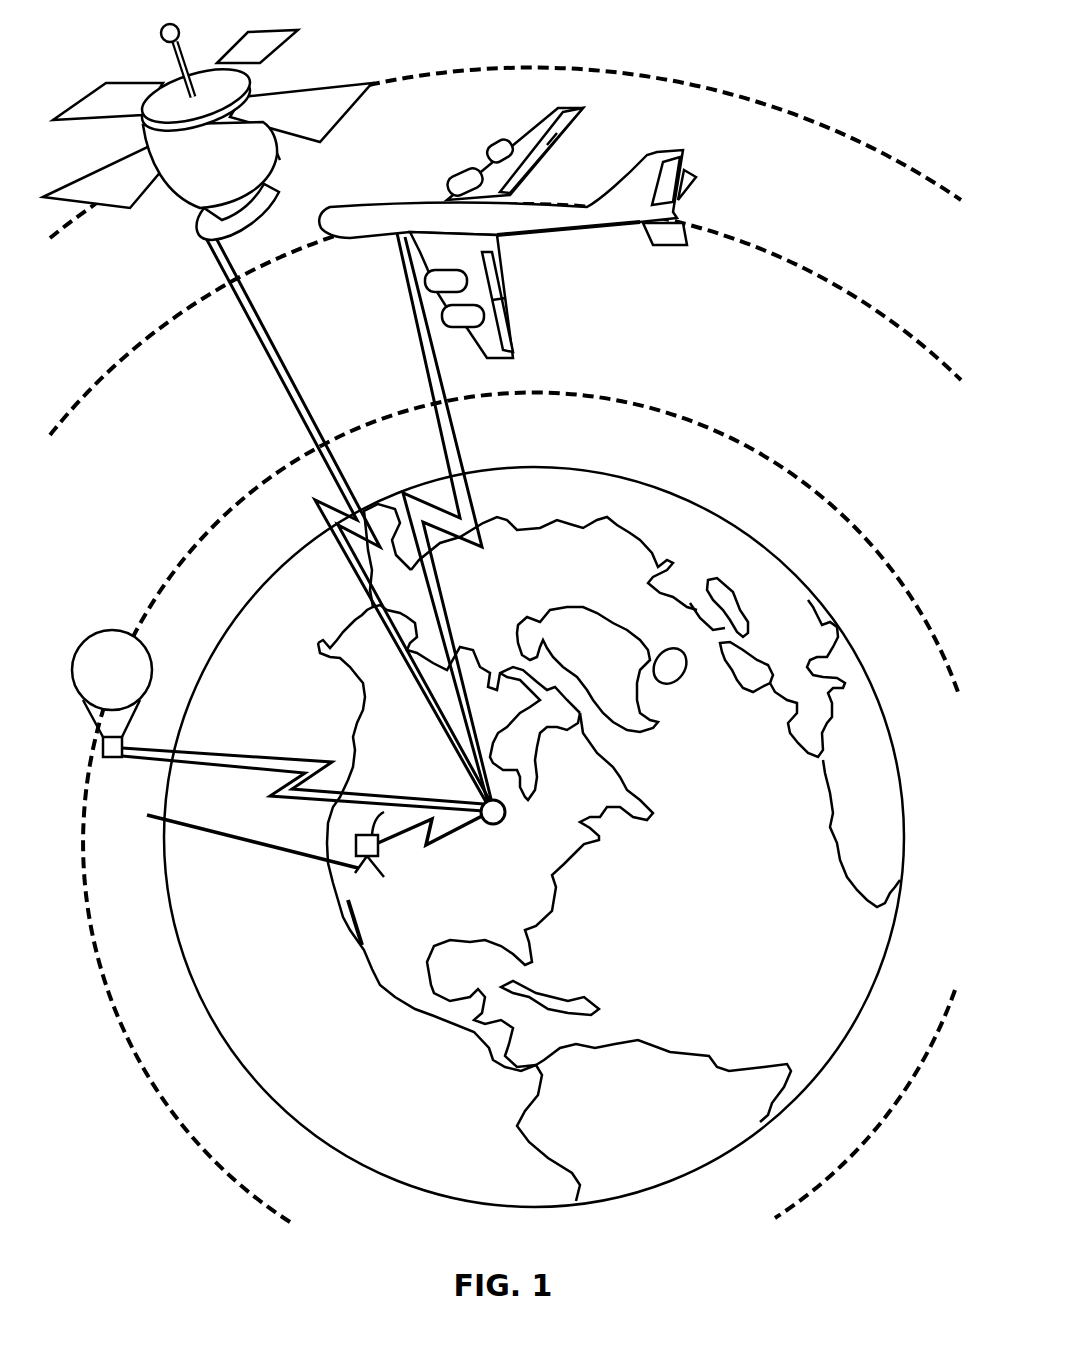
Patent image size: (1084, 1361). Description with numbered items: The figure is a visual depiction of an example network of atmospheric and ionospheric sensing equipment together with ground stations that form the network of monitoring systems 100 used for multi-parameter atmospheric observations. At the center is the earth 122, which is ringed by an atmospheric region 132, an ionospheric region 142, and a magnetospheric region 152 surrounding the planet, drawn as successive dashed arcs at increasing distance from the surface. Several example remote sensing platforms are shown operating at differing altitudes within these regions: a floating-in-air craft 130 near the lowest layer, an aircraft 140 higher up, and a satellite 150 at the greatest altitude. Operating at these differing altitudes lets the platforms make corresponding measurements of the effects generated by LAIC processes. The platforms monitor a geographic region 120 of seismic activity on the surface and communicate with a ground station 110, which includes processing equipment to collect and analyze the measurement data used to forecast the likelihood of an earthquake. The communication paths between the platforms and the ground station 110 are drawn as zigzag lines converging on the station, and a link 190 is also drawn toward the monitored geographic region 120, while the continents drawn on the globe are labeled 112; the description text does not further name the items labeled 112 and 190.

The network of monitoring systems 100 is at (768, 50).
The ground station 110 is at (501, 822).
The earth 112 is at (707, 1024).
The geographic region 120 is at (397, 850).
The earth 122 is at (763, 548).
The floating-in-air craft 130 is at (132, 633).
The atmospheric region 132 is at (800, 480).
The aircraft 140 is at (530, 205).
The ionospheric region 142 is at (805, 275).
The satellite 150 is at (187, 190).
The magnetospheric region 152 is at (805, 118).
The communication link 190 is at (226, 835).